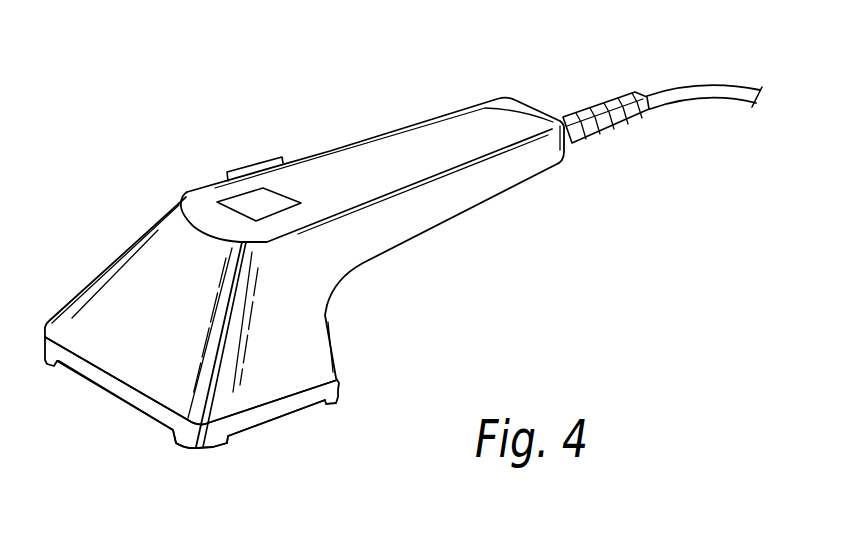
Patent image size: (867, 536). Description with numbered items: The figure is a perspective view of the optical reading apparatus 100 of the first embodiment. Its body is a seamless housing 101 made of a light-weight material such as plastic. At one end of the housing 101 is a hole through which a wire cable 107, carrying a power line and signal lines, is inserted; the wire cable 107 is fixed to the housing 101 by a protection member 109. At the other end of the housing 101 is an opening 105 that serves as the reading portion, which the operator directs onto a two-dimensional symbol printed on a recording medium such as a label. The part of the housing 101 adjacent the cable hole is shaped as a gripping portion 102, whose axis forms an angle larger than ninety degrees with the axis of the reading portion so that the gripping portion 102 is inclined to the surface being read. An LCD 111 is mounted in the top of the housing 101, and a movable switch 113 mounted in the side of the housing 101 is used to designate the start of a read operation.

The optical reading apparatus 100 is at (493, 80).
The housing 101 is at (477, 207).
The gripping portion 102 is at (373, 160).
The opening 105 is at (258, 428).
The wire cable 107 is at (712, 93).
The protection member 109 is at (577, 140).
The LCD 111 is at (243, 203).
The movable switch 113 is at (267, 162).